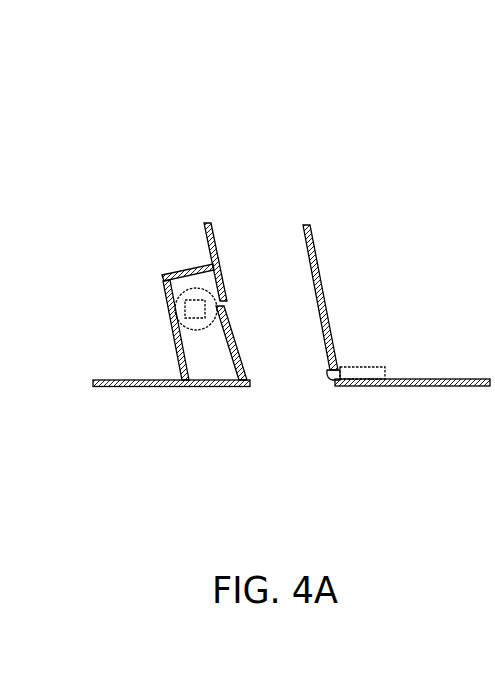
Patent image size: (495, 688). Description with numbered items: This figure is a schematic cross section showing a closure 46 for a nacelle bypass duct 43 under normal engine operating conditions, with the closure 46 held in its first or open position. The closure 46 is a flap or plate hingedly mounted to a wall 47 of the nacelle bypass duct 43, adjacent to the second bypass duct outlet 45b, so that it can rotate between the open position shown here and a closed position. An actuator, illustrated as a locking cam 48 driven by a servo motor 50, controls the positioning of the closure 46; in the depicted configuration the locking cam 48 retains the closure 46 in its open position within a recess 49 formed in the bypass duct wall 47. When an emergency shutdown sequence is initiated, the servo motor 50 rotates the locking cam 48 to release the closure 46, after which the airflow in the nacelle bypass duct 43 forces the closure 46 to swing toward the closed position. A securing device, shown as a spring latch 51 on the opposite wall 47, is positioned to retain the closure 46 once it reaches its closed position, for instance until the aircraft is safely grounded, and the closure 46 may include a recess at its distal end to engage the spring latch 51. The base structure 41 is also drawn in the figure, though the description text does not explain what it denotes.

The base plate 41 is at (198, 388).
The gap 43 is at (255, 224).
The opening 45b is at (292, 383).
The side wall 46 is at (229, 358).
The opposing wall 47 is at (318, 273).
The inner wall 48 is at (175, 288).
The top wall 49 is at (178, 269).
The sensor 50 is at (195, 309).
The magnet 51 is at (364, 364).